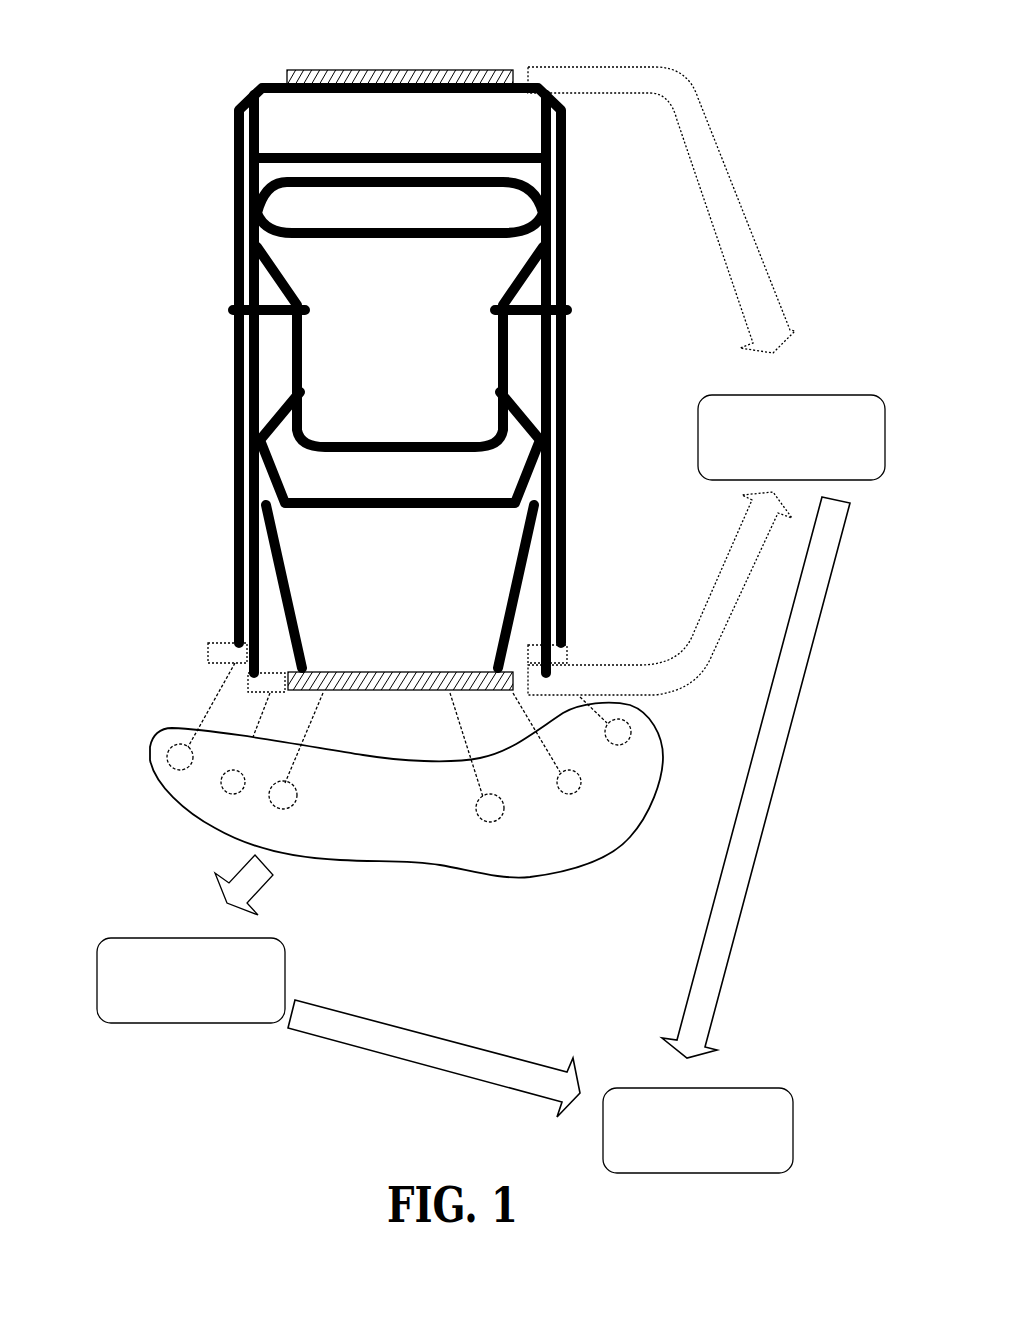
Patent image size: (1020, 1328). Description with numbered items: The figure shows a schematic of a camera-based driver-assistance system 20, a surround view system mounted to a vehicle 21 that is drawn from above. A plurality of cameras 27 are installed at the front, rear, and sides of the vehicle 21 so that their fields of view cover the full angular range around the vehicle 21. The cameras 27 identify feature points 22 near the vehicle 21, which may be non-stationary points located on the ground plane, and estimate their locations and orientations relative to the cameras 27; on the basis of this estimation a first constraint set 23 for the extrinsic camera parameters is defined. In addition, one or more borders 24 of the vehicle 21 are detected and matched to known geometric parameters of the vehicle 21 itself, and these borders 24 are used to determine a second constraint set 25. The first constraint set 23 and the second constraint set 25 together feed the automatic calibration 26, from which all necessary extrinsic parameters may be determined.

The camera-based driver-assistance system 20 is at (73, 91).
The vehicle 21 is at (232, 267).
The feature points 22 is at (407, 860).
The first constraint set 23 is at (135, 1023).
The borders 24 is at (417, 70).
The second constraint set 25 is at (843, 392).
The automatic calibration 26 is at (773, 1088).
The cameras 27 is at (213, 642).